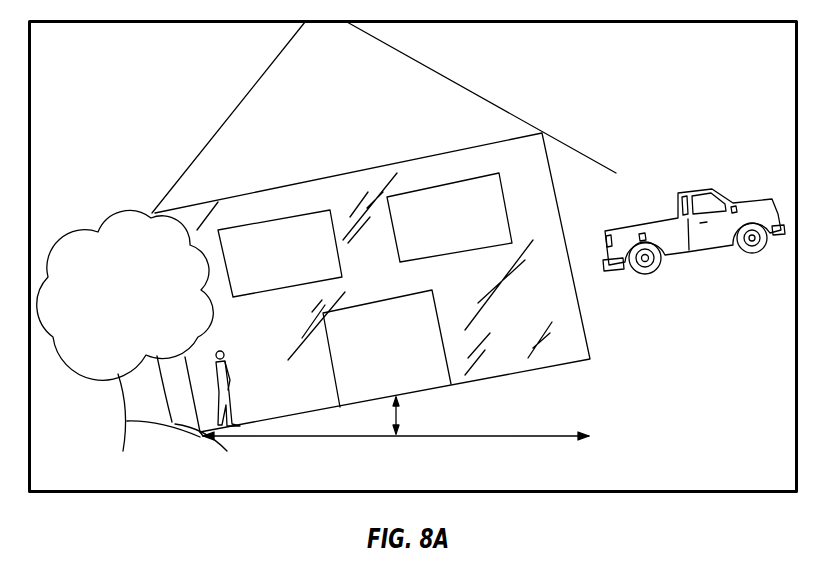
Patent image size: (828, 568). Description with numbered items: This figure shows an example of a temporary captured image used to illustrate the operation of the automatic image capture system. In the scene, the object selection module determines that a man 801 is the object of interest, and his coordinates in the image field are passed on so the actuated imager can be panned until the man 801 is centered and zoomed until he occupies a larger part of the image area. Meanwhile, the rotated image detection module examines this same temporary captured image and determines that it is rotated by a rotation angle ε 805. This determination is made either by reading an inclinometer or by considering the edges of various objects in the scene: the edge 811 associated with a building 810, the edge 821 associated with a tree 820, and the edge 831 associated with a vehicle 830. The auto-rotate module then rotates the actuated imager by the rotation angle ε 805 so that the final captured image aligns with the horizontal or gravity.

The building 810 is at (482, 97).
The edge 811 is at (486, 147).
The tree 820 is at (125, 222).
The man 801 is at (237, 408).
The rotation angle ε 805 is at (417, 414).
The edge 821 is at (200, 437).
The vehicle 830 is at (711, 182).
The edge 831 is at (638, 273).